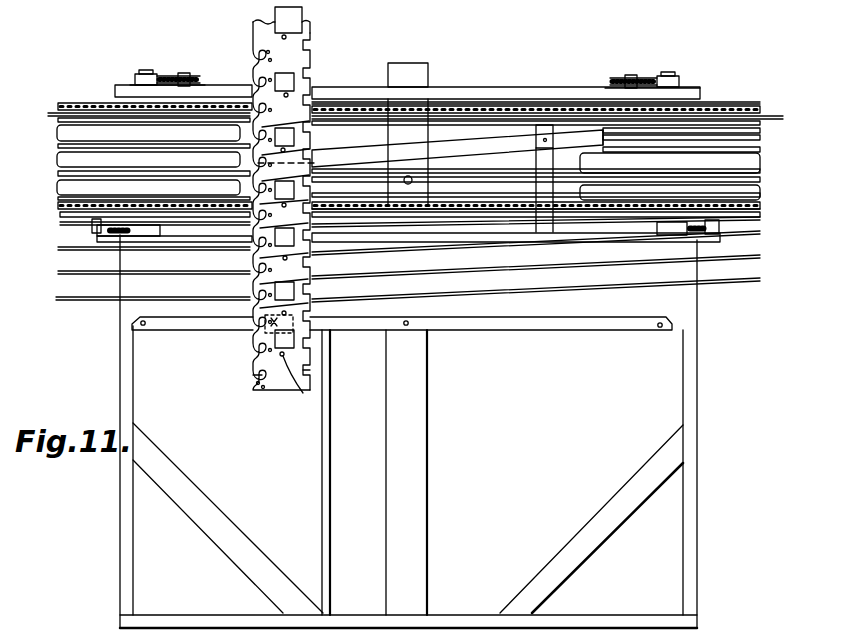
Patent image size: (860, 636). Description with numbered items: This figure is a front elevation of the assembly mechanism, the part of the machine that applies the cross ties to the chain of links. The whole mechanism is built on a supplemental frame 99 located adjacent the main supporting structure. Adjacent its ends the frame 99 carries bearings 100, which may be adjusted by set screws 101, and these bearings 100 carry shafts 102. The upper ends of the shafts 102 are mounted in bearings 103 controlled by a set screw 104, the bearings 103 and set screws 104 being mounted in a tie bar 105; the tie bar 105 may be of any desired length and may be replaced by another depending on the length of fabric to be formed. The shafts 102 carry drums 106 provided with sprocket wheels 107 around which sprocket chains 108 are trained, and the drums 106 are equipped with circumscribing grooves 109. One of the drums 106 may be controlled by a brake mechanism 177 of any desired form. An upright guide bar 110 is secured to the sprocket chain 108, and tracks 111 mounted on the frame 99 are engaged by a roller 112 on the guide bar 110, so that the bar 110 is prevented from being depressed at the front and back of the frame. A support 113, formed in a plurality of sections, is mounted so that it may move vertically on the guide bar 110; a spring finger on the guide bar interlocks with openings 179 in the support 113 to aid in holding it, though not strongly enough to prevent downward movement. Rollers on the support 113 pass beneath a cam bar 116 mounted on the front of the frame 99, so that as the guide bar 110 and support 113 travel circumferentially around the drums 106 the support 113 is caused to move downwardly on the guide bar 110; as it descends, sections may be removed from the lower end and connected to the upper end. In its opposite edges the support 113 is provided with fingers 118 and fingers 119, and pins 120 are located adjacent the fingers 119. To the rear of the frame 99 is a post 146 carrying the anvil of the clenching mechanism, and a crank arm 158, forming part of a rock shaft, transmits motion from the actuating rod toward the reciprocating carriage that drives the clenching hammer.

The supplemental frame 99 is at (690, 387).
The bearings 100 is at (143, 225).
The set screws 101 is at (93, 223).
The shafts 102 is at (148, 73).
The bearings 103 is at (135, 84).
The set screw 104 is at (200, 78).
The tie bar 105 is at (483, 91).
The drums 106 is at (58, 128).
The sprocket wheels 107 is at (57, 103).
The sprocket chains 108 is at (337, 103).
The circumscribing grooves 109 is at (87, 163).
The upright guide bar 110 is at (290, 13).
The tracks 111 is at (532, 322).
The roller 112 is at (253, 330).
The support 113 is at (284, 383).
The cam bar 116 is at (467, 153).
The fingers 118 is at (313, 377).
The fingers 119 is at (252, 372).
The pins 120 is at (257, 393).
The post 146 is at (420, 512).
The crank arm 158 is at (330, 510).
The brake mechanism 177 is at (611, 131).
The openings 179 is at (303, 393).